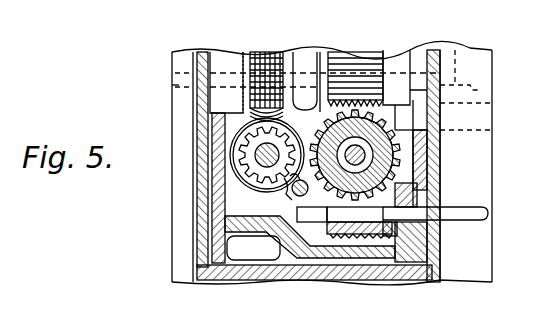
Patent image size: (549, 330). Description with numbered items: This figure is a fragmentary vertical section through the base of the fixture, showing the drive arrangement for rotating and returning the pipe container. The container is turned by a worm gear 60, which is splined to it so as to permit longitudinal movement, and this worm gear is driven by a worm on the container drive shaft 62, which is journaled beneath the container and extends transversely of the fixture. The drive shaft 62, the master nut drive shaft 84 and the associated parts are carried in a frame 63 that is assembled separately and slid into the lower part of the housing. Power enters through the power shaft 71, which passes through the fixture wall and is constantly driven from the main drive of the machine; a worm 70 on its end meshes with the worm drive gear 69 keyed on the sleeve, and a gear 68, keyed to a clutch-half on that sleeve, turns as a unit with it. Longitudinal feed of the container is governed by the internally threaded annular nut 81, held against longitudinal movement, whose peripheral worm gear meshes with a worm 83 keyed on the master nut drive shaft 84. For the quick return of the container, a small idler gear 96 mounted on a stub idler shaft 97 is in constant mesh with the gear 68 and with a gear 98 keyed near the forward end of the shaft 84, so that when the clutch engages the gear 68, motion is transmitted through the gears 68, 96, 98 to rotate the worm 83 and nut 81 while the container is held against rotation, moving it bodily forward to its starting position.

The worm gear 60 is at (351, 67).
The container drive shaft 62 is at (362, 105).
The frame 63 is at (310, 237).
The gear 68 is at (441, 148).
The worm drive gear 69 is at (403, 131).
The worm 70 is at (353, 238).
The power shaft 71 is at (464, 207).
The annular nut 81 is at (278, 44).
The worm 83 is at (226, 82).
The master nut drive shaft 84 is at (240, 177).
The idler gear 96 is at (290, 194).
The stub idler shaft 97 is at (272, 212).
The gear 98 is at (250, 160).